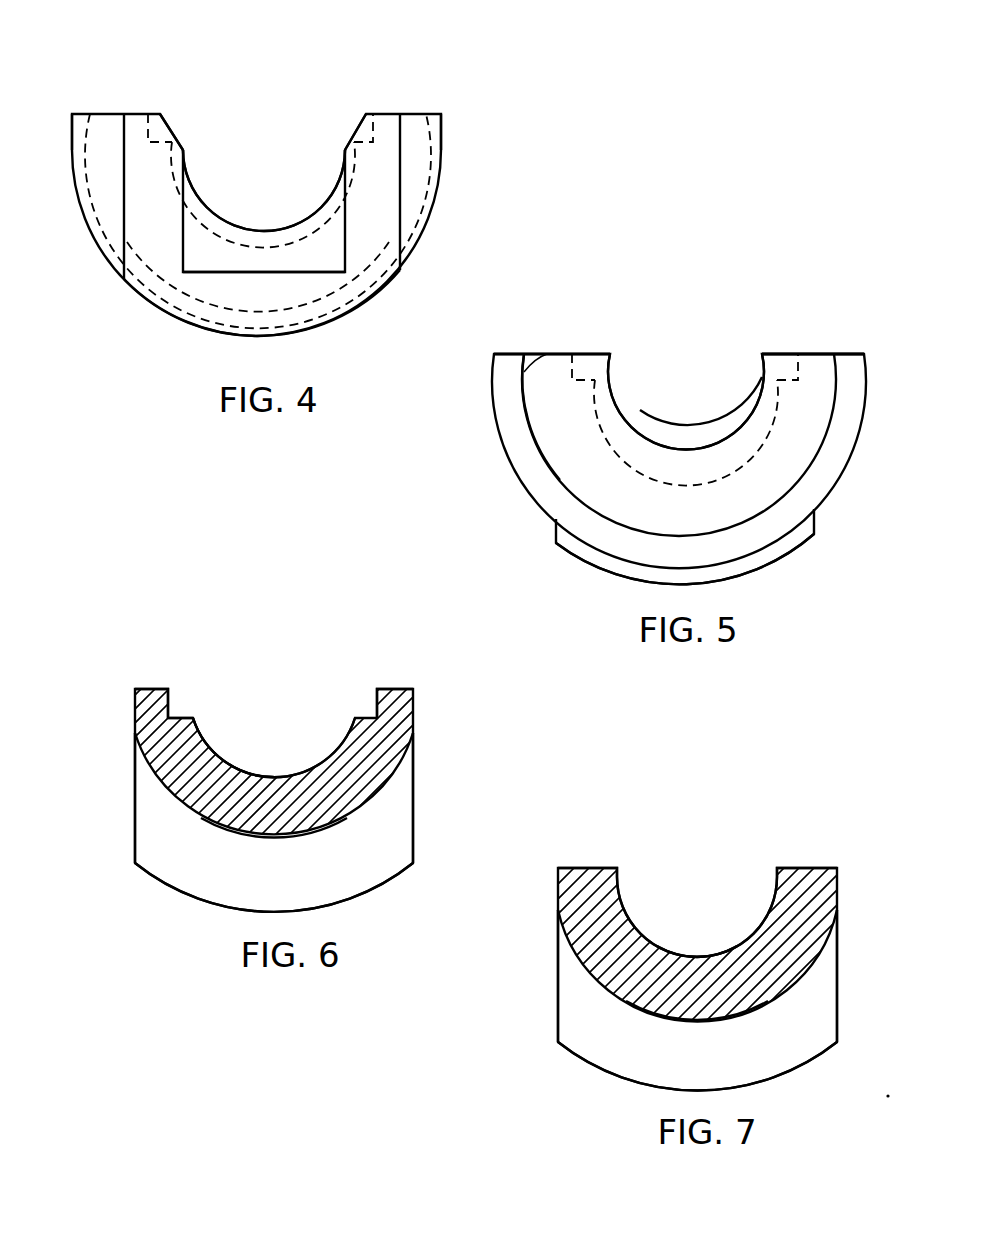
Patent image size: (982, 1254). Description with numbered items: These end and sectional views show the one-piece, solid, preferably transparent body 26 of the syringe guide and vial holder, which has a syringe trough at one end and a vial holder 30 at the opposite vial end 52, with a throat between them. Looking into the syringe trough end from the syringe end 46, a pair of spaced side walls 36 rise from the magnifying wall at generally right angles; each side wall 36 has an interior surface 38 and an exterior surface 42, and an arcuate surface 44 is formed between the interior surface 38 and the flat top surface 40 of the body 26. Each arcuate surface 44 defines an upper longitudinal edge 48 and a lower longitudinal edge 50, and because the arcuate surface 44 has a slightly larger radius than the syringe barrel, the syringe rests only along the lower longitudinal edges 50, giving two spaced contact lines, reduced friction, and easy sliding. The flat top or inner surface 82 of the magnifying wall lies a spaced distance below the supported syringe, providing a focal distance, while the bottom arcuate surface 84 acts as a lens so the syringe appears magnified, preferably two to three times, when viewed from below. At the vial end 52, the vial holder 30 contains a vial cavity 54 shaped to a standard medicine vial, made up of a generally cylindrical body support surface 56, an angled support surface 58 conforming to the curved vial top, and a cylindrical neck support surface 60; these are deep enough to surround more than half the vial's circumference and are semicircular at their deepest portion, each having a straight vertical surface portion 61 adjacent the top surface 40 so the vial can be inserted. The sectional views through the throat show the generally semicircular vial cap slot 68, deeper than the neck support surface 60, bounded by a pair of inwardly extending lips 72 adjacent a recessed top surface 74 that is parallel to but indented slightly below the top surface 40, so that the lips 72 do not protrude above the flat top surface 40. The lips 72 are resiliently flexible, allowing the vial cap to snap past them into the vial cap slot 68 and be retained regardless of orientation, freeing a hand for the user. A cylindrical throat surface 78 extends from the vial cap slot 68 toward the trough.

In FIG. 6, the body 26 is at (176, 840).
In FIG. 7, the body 26 is at (794, 1019).
In FIG. 4, the vial holder 30 is at (227, 303).
In FIG. 5, the vial holder 30 is at (512, 461).
In FIG. 4, the side walls 36 is at (140, 185).
In FIG. 4, the interior surface 38 is at (345, 215).
In FIG. 4, the top surface 40 is at (113, 110).
In FIG. 5, the top surface 40 is at (510, 352).
In FIG. 6, the top surface 40 is at (152, 688).
In FIG. 7, the top surface 40 is at (590, 868).
In FIG. 4, the exterior surface 42 is at (113, 138).
In FIG. 6, the exterior surface 42 is at (135, 787).
In FIG. 7, the exterior surface 42 is at (558, 965).
In FIG. 4, the arcuate surface 44 is at (354, 130).
In FIG. 4, the syringe end 46 is at (252, 303).
In FIG. 4, the upper longitudinal edge 48 is at (166, 132).
In FIG. 4, the lower longitudinal edge 50 is at (345, 150).
In FIG. 5, the vial end 52 is at (790, 515).
In FIG. 5, the vial cavity 54 is at (777, 472).
In FIG. 5, the body support surface 56 is at (558, 468).
In FIG. 5, the angled support surface 58 is at (813, 350).
In FIG. 5, the neck support surface 60 is at (640, 432).
In FIG. 7, the neck support surface 60 is at (666, 960).
In FIG. 5, the vertical surface portion 61 is at (610, 353).
In FIG. 5, the vial cap slot 68 is at (737, 480).
In FIG. 6, the vial cap slot 68 is at (277, 795).
In FIG. 7, the vial cap slot 68 is at (672, 940).
In FIG. 5, the lips 72 is at (753, 367).
In FIG. 6, the lips 72 is at (194, 717).
In FIG. 6, the recessed top surface 74 is at (184, 717).
In FIG. 4, the cylindrical throat surface 78 is at (212, 203).
In FIG. 5, the cylindrical throat surface 78 is at (642, 408).
In FIG. 6, the cylindrical throat surface 78 is at (232, 767).
In FIG. 7, the cylindrical throat surface 78 is at (737, 940).
In FIG. 4, the top or inner surface of magnifying wall 82 is at (210, 267).
In FIG. 4, the bottom arcuate surface 84 is at (307, 337).
In FIG. 5, the bottom arcuate surface 84 is at (745, 572).
In FIG. 6, the bottom arcuate surface 84 is at (195, 900).
In FIG. 7, the bottom arcuate surface 84 is at (632, 1077).